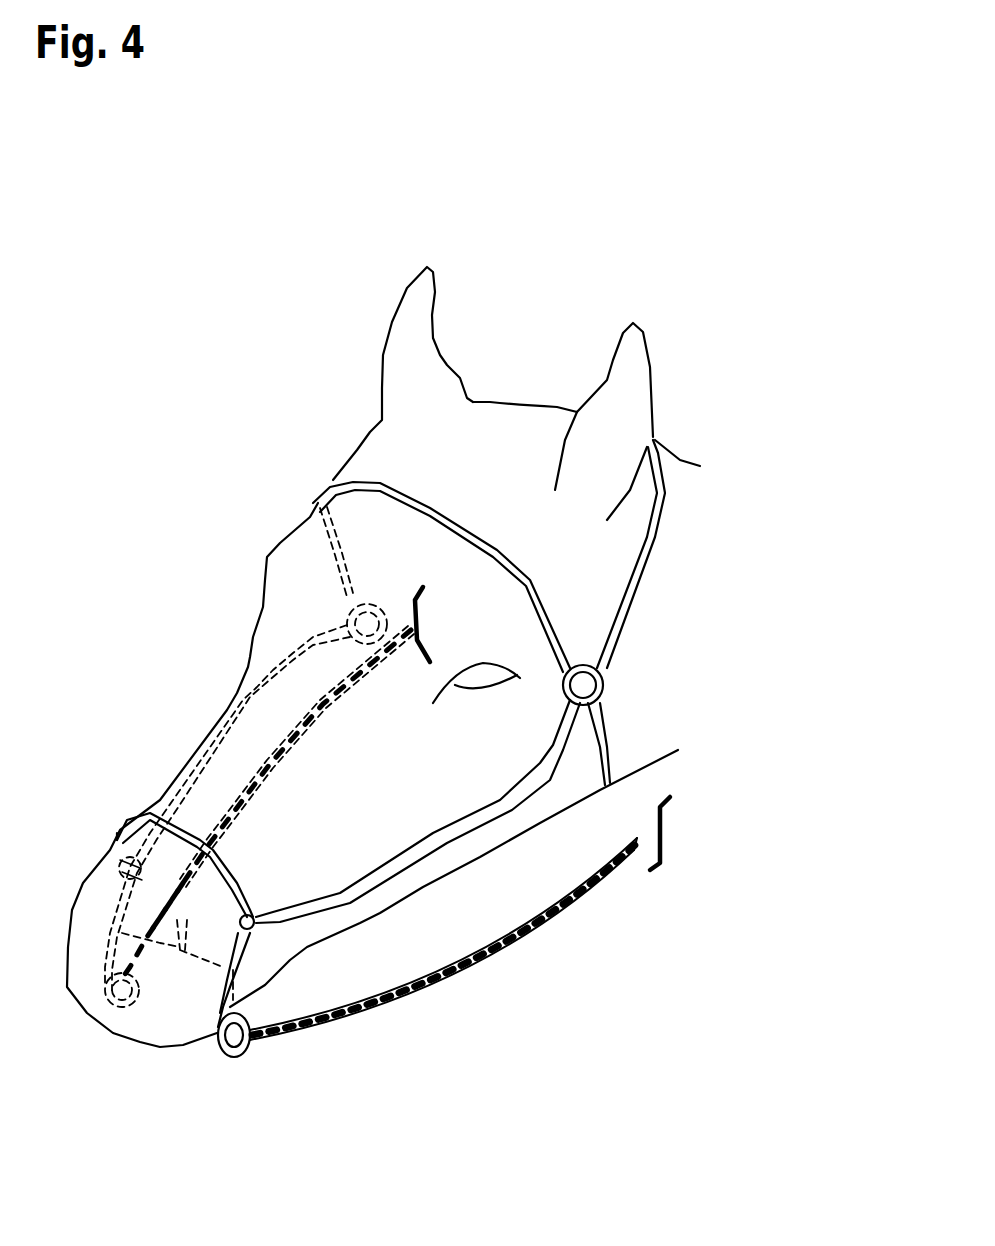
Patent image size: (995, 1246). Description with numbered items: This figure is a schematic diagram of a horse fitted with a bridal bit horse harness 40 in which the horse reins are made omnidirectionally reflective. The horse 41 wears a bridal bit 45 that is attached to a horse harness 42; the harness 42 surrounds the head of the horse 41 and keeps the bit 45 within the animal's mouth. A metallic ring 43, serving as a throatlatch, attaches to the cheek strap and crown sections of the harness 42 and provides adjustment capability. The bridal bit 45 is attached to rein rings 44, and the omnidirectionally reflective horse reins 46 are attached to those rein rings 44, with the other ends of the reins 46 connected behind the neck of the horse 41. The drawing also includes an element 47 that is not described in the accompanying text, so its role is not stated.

The bridal bit horse harness 40 is at (518, 320).
The horse 41 is at (387, 403).
The horse harness 42 is at (430, 507).
The metallic ring 43 is at (603, 692).
The rein rings 44 is at (117, 1007).
The bridal bit 45 is at (187, 917).
The omnidirectionally reflective horse reins 46 is at (507, 947).
The rope section 47 is at (320, 713).